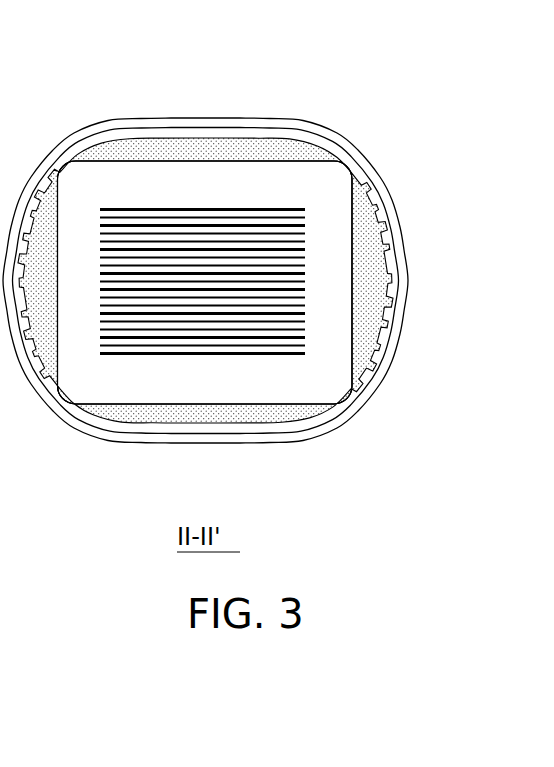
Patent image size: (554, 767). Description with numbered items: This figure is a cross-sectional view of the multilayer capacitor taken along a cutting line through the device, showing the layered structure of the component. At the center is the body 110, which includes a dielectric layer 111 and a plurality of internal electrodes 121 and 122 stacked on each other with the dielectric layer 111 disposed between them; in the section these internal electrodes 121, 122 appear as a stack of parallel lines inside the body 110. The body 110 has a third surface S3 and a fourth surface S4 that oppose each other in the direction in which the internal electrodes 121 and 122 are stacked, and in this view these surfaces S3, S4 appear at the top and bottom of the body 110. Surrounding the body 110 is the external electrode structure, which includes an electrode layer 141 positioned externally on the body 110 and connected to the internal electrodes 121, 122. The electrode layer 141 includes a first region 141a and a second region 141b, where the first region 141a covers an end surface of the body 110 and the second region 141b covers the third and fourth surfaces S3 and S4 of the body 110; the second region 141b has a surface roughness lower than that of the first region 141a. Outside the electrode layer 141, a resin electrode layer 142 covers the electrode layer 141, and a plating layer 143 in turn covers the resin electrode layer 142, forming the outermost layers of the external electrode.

The body 110 is at (230, 160).
The dielectric layer 111 is at (224, 213).
The first internal electrode 121 is at (145, 207).
The second internal electrode 122 is at (165, 220).
The electrode layer 141 is at (259, 228).
The first region 141a is at (370, 290).
The second region 141b is at (300, 160).
The resin electrode layer 142 is at (50, 163).
The plating layer 143 is at (100, 130).
The third surface S3 is at (260, 157).
The fourth surface S4 is at (198, 403).